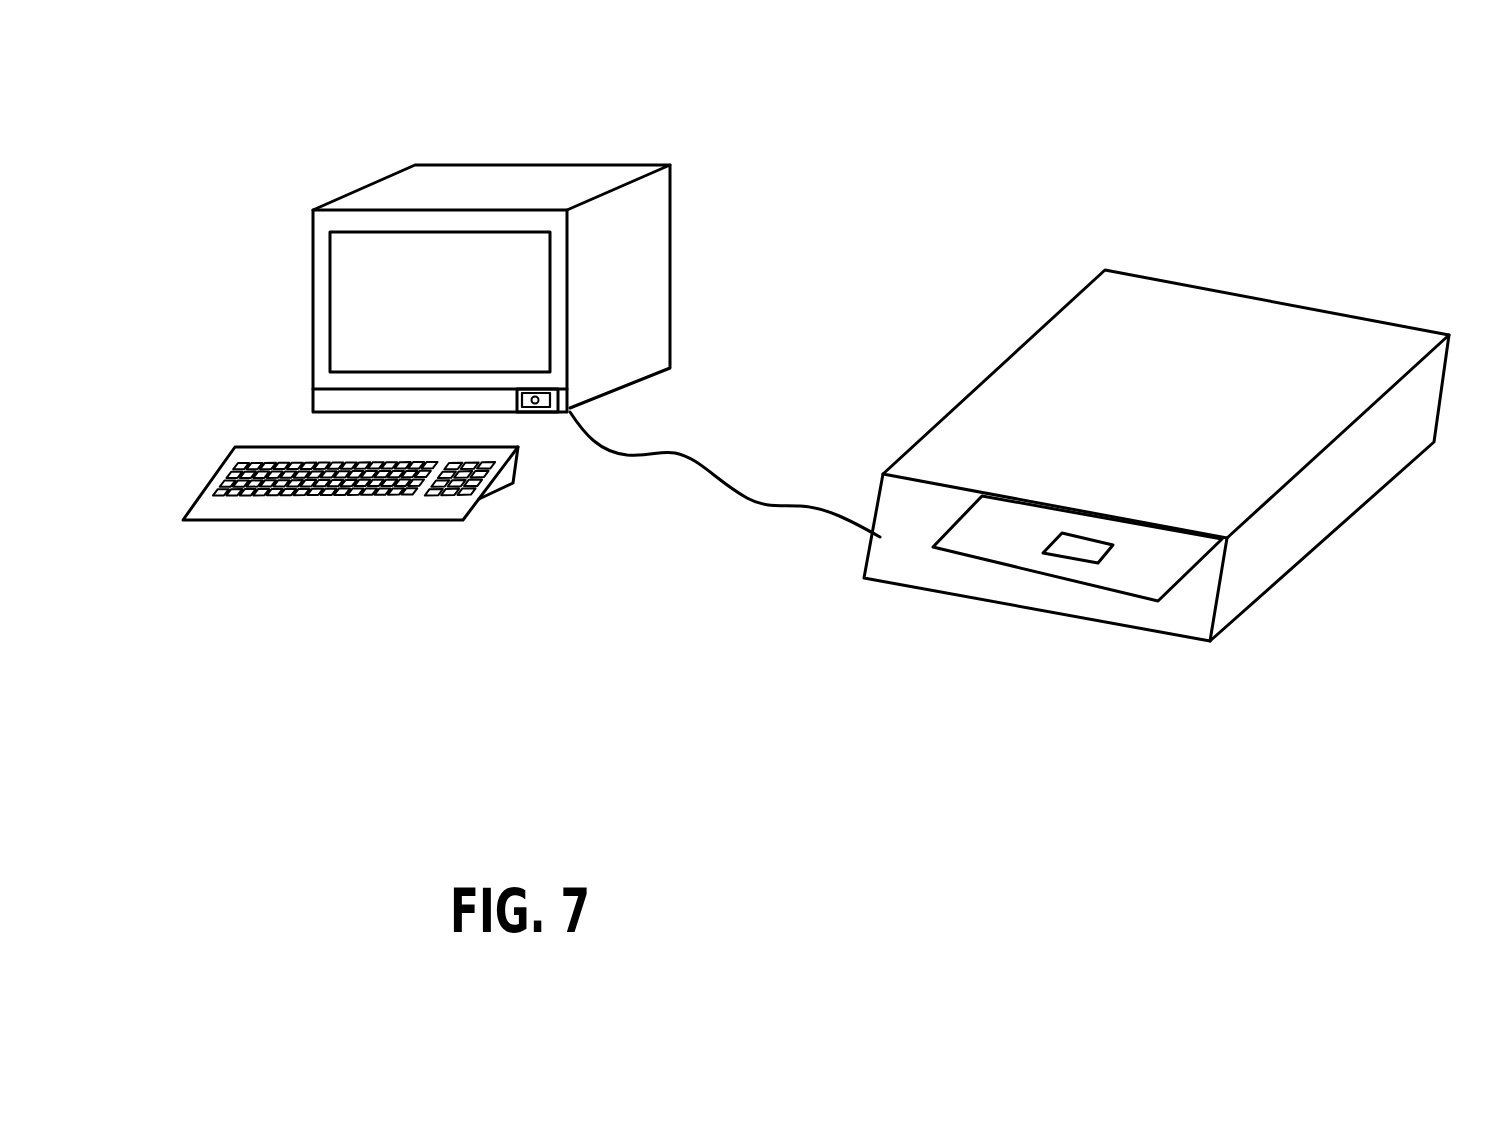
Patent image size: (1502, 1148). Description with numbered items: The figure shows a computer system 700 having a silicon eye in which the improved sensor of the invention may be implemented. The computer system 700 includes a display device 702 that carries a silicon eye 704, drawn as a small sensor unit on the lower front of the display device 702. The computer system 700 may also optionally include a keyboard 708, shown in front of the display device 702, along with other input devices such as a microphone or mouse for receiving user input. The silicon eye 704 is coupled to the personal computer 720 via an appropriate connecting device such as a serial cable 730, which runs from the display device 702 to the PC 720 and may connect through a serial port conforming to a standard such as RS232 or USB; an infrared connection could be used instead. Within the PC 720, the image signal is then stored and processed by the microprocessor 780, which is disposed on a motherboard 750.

The computer system 700 is at (630, 122).
The display device 702 is at (643, 269).
The silicon eye 704 is at (550, 412).
The keyboard 708 is at (332, 520).
The personal computer (PC) 720 is at (1239, 346).
The serial cable 730 is at (750, 498).
The motherboard 750 is at (1148, 583).
The microprocessor 780 is at (1068, 552).